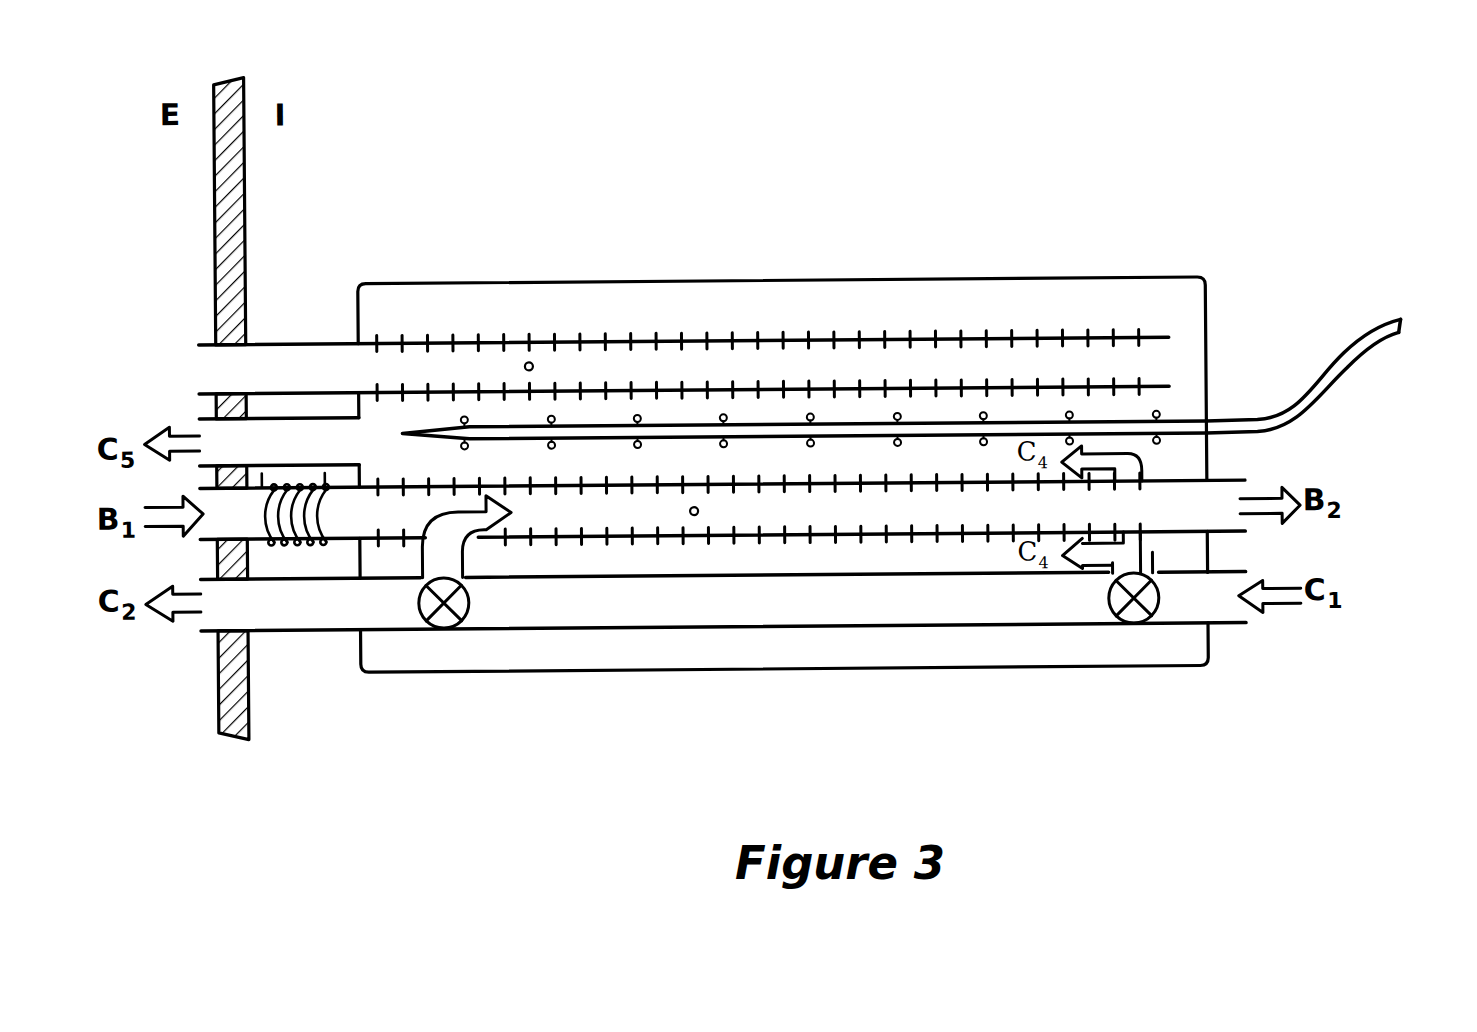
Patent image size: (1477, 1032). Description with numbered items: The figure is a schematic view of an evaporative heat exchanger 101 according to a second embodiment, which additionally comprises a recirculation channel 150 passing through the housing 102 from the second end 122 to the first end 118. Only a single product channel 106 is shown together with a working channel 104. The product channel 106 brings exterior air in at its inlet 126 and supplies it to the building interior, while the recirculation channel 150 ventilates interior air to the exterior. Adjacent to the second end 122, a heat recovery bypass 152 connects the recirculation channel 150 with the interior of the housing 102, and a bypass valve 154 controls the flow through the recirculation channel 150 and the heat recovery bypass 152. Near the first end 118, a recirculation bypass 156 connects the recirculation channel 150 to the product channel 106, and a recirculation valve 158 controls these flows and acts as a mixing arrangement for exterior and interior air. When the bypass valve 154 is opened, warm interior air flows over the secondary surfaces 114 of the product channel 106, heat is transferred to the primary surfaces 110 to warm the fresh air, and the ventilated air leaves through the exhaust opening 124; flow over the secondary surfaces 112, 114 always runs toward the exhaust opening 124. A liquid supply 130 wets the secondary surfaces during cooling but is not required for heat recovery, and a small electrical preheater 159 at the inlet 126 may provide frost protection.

The evaporative heat exchanger 101 is at (1229, 176).
The housing 102 is at (1141, 281).
The working channel 104 is at (533, 362).
The product channel 106 is at (690, 513).
The primary surfaces 110 is at (795, 535).
The secondary surfaces 112 is at (748, 341).
The secondary surfaces 114 is at (853, 535).
The first end 118 is at (356, 670).
The second end 122 is at (1208, 662).
The exhaust opening 124 is at (327, 415).
The inlet 126 is at (343, 524).
The liquid supply 130 is at (1345, 367).
The recirculation channel 150 is at (970, 627).
The heat recovery bypass 152 is at (1152, 556).
The bypass valve 154 is at (1110, 606).
The recirculation bypass 156 is at (465, 556).
The recirculation valve 158 is at (440, 626).
The electrical preheater 159 is at (280, 474).